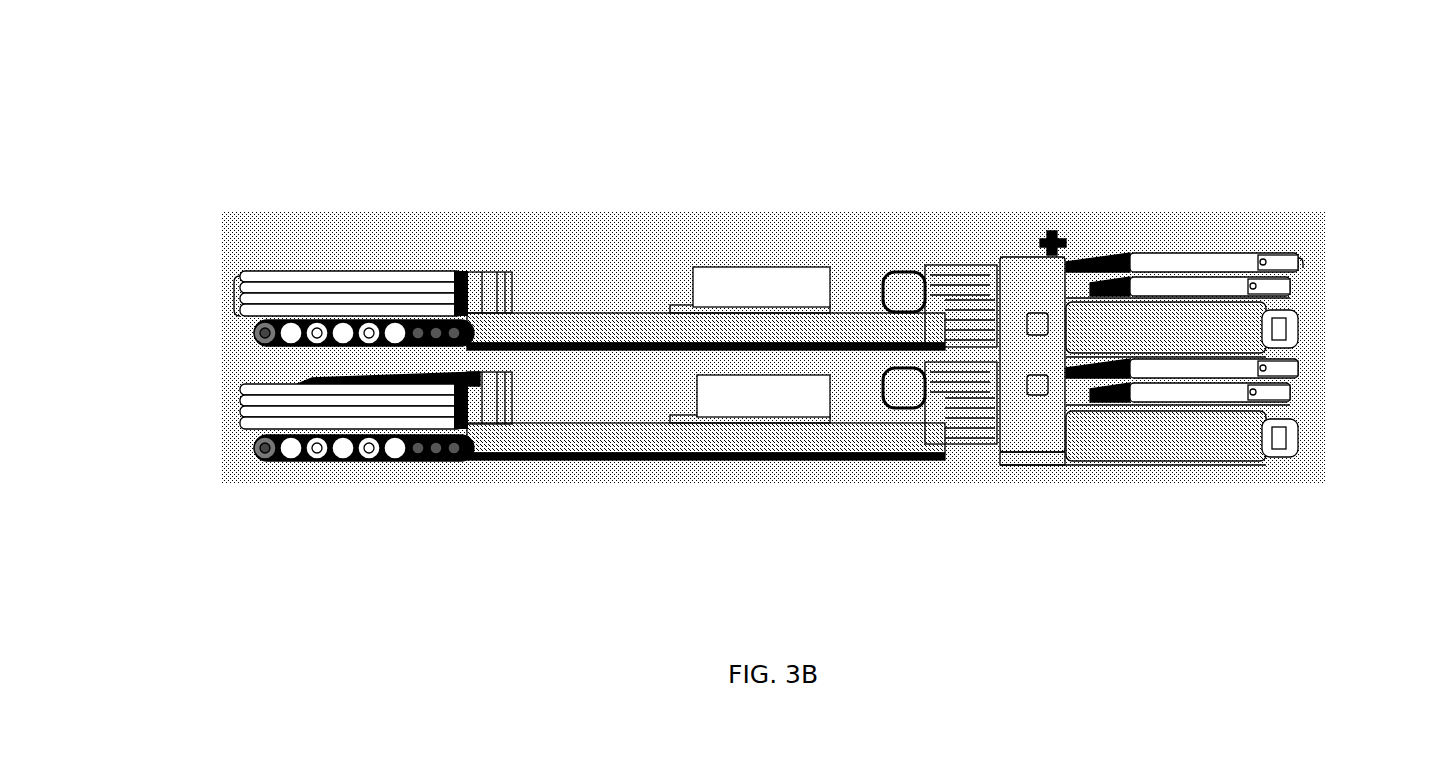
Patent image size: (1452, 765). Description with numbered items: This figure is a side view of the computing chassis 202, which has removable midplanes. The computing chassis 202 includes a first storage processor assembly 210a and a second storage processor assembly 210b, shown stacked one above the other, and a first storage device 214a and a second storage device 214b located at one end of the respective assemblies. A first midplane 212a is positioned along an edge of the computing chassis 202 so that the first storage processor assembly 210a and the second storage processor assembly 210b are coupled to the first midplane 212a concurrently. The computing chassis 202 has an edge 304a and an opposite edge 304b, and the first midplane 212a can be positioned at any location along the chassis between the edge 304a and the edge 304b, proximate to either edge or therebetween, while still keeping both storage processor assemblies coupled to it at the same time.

The computing chassis 202 is at (763, 328).
The first storage processor assembly 210a is at (790, 492).
The second storage processor assembly 210b is at (590, 218).
The first midplane 212a is at (1030, 258).
The first storage device 214a is at (301, 498).
The second storage device 214b is at (306, 230).
The edge 304a is at (195, 335).
The edge 304b is at (1332, 348).